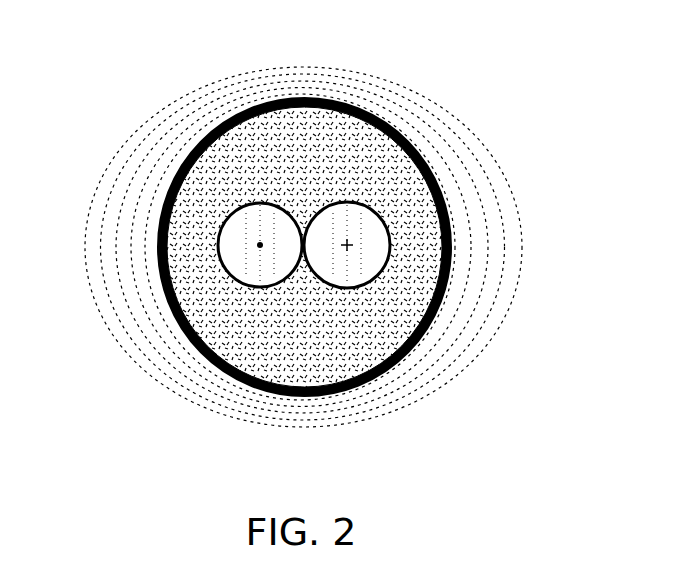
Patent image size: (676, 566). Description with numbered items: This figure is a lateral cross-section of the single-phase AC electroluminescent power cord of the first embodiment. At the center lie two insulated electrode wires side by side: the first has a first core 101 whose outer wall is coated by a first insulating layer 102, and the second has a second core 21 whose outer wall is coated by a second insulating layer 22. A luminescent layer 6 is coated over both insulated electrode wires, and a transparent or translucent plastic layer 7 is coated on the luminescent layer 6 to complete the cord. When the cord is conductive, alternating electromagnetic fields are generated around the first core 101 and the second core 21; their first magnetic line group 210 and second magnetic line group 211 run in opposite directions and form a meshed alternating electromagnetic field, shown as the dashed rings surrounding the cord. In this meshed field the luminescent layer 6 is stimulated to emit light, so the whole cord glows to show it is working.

The luminescent layer 6 is at (317, 97).
The transparent or translucent plastic layer 7 is at (240, 108).
The second core 21 is at (207, 358).
The second insulating layer 22 is at (180, 322).
The first core 101 is at (393, 362).
The first insulating layer 102 is at (437, 322).
The first magnetic line group 210 is at (170, 110).
The second magnetic line group 211 is at (435, 107).